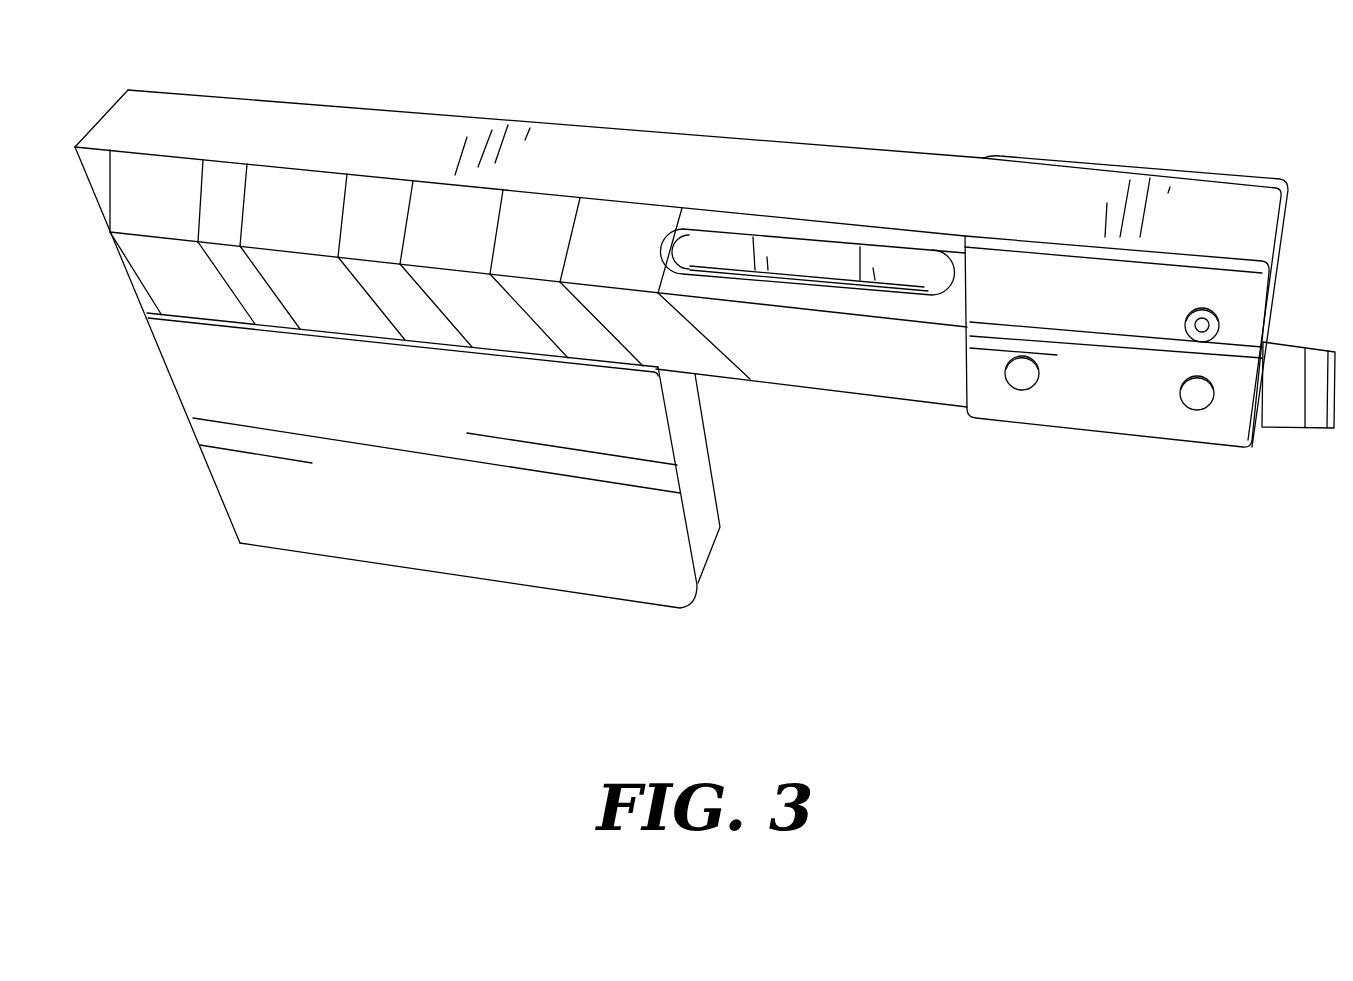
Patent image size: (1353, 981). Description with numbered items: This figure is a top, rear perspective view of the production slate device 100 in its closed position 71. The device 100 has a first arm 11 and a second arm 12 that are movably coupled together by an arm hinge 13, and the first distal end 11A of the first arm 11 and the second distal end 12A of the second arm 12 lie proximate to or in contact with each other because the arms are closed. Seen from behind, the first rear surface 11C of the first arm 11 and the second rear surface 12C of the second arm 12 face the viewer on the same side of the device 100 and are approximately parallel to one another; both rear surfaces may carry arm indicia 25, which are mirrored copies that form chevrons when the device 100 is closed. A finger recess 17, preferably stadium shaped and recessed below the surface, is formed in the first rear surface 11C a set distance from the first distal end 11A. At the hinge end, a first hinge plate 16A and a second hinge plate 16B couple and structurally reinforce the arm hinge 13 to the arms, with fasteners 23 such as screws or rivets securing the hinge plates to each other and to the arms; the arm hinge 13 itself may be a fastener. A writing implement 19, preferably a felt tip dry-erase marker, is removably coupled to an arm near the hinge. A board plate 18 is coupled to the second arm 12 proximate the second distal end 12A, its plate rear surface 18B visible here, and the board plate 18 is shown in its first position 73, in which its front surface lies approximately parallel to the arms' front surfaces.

The production slate device 100 is at (684, 327).
The first arm 11 is at (747, 163).
The first distal end 11A is at (100, 120).
The first rear surface 11C is at (370, 212).
The arm indicia 25 is at (623, 245).
The closed position 71 is at (97, 231).
The second distal end 12A is at (127, 275).
The second arm 12 is at (898, 373).
The second rear surface 12C is at (798, 352).
The finger recess 17 is at (818, 262).
The first hinge plate 16A is at (1193, 175).
The second hinge plate 16B is at (1065, 405).
The arm hinge 13 is at (1185, 323).
The fastener 23 is at (1181, 400).
The writing implement 19 is at (1295, 360).
The board plate 18 is at (503, 522).
The plate rear surface 18B is at (262, 480).
The first position 73 is at (737, 470).